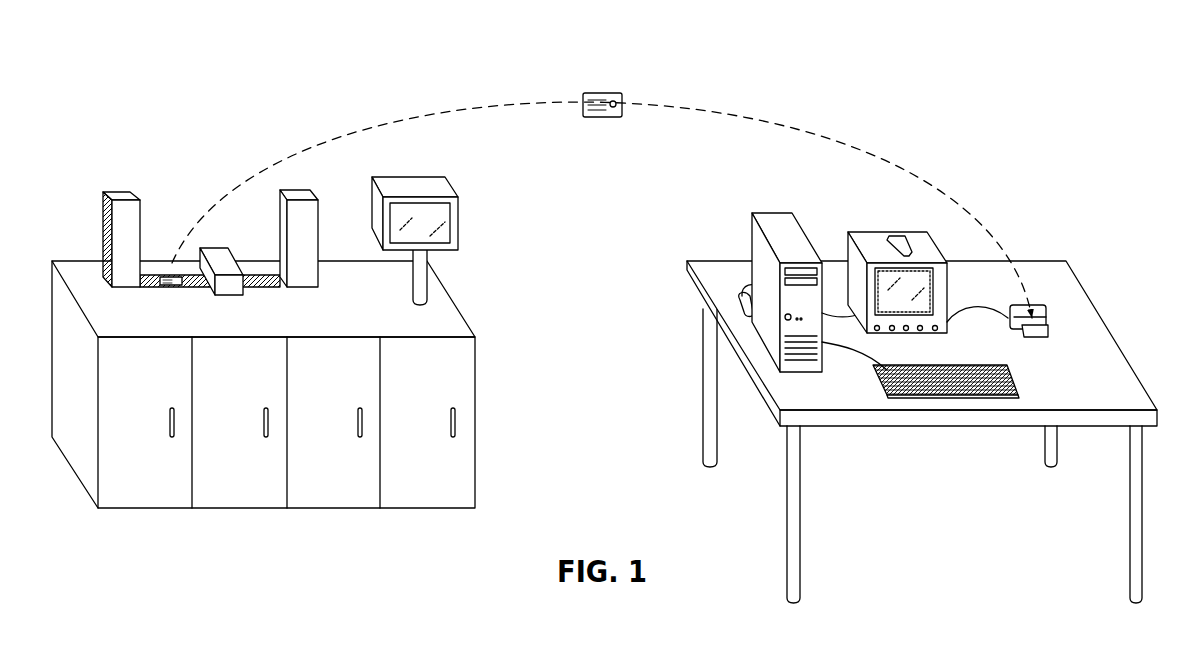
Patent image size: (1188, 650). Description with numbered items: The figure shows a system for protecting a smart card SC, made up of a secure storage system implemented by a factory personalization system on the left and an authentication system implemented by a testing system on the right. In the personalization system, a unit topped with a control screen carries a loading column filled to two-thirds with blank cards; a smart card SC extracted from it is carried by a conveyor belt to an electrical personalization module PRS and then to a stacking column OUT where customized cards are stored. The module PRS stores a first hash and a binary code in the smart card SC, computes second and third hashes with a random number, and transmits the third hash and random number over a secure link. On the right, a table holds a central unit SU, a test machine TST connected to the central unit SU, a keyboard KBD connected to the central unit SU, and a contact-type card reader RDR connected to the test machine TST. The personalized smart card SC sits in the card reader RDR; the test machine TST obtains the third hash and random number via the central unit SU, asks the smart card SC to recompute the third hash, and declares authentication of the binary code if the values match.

The smart card SC is at (165, 270).
The electrical personalization module PRS is at (239, 250).
The stacking column OUT is at (323, 202).
The central unit SU is at (760, 206).
The test machine TST is at (860, 227).
The card reader RDR is at (1039, 290).
The keyboard KBD is at (1021, 378).